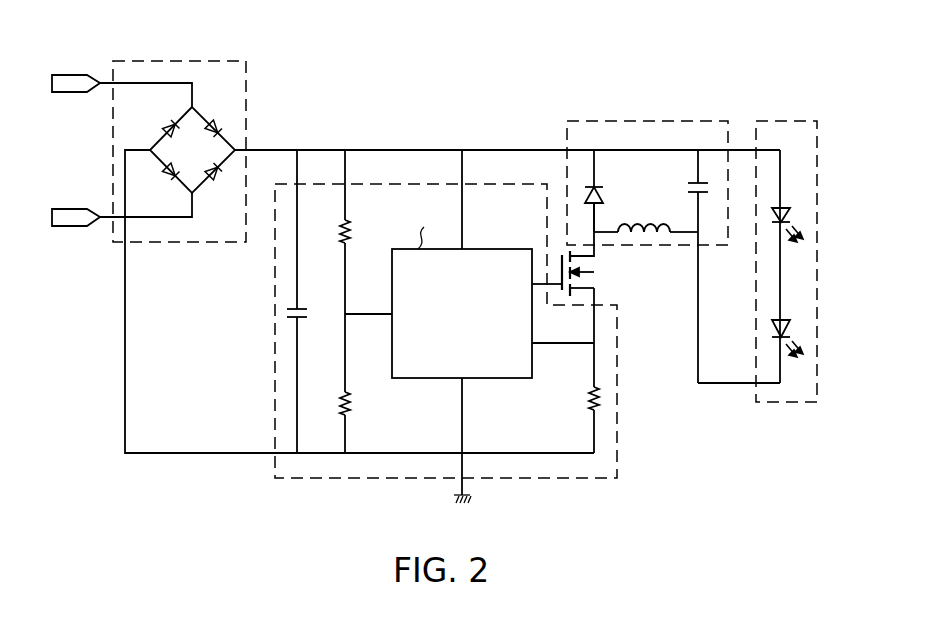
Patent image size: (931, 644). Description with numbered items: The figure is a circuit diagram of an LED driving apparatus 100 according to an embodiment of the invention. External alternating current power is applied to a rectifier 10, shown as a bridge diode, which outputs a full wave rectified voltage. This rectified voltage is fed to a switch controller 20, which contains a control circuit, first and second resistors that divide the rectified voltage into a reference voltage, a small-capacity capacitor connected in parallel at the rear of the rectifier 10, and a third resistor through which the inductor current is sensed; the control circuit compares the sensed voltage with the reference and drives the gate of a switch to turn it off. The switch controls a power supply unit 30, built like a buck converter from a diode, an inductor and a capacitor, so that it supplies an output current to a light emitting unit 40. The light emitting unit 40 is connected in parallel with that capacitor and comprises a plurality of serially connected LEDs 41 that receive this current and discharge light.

The LED driving circuit 100 is at (703, 42).
The rectifier 10 is at (164, 61).
The switch controller 20 is at (275, 358).
The power supply unit 30 is at (606, 121).
The light emitting unit 40 is at (760, 121).
The LED 41 is at (790, 211).